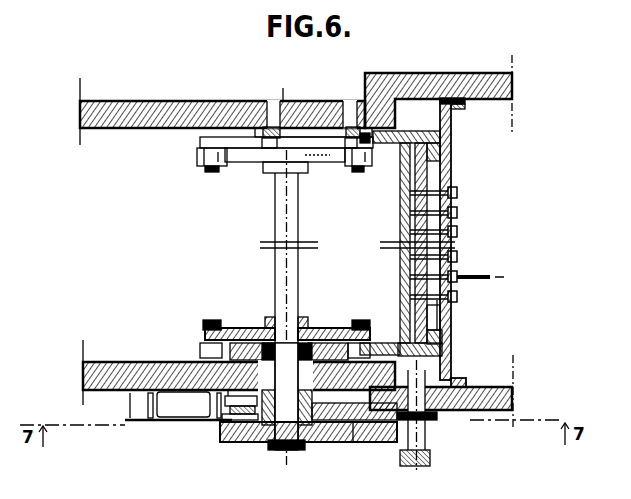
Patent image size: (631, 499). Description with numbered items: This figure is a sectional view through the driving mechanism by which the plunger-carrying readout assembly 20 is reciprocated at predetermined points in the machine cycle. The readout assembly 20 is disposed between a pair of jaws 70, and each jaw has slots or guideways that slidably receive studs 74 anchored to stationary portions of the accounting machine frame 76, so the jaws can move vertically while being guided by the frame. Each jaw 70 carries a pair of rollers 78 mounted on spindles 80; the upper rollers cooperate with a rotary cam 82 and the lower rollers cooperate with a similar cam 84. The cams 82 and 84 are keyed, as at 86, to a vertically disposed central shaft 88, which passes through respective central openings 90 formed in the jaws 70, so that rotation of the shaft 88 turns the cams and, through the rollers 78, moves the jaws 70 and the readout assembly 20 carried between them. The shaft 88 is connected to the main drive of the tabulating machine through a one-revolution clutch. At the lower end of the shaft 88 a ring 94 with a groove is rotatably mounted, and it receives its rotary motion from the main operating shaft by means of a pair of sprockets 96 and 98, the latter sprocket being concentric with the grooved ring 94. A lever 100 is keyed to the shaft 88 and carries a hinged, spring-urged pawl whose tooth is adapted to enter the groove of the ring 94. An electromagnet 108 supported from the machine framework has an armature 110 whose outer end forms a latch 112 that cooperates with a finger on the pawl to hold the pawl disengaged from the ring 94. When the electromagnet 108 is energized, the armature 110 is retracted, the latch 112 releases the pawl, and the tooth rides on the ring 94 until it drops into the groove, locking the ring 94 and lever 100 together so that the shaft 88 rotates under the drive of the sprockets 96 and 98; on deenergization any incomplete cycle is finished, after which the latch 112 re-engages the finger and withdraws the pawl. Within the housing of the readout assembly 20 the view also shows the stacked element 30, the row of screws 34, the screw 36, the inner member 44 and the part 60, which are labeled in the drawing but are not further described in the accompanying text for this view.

The readout assembly 20 is at (500, 243).
The stator 30 is at (432, 186).
The screws 34 is at (452, 201).
The screw 36 is at (459, 296).
The inner wall 44 is at (400, 280).
The housing support 60 is at (450, 311).
The jaws 70 is at (445, 143).
The studs 74 is at (250, 80).
The accounting machine frame 76 is at (128, 84).
The rollers 78 is at (204, 152).
The spindles 80 is at (213, 172).
The rotary cam 82 is at (338, 150).
The cam 84 is at (248, 330).
The key 86 is at (287, 167).
The central shaft 88 is at (300, 197).
The central openings 90 is at (348, 316).
The ring 94 is at (330, 410).
The sprocket 96 is at (462, 440).
The sprocket 98 is at (333, 442).
The lever 100 is at (304, 398).
The electromagnet 108 is at (178, 406).
The armature 110 is at (220, 418).
The latch 112 is at (226, 421).